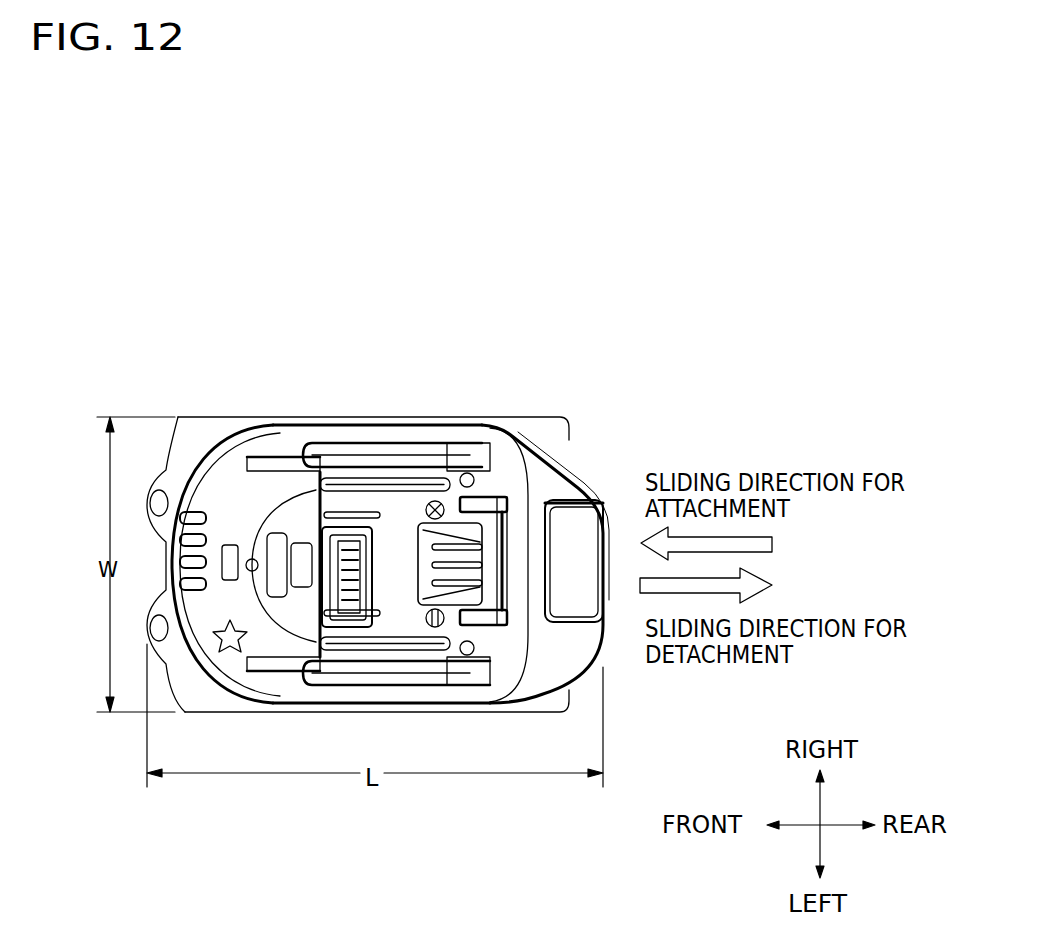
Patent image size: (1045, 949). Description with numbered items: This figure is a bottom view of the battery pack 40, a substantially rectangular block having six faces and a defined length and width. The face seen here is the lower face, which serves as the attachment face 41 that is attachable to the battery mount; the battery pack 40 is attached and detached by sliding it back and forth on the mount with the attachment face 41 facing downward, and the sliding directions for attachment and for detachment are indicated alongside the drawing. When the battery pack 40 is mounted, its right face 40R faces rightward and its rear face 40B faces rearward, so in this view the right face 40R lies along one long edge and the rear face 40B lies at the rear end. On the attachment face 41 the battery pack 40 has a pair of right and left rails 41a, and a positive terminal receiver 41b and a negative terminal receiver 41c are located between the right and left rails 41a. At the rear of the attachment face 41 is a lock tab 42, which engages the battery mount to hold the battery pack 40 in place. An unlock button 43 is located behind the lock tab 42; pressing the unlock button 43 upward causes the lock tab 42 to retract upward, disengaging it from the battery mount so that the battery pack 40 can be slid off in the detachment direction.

The battery pack 40 is at (177, 396).
The right face 40R is at (358, 424).
The rear face 40B is at (605, 487).
The attachment face 41 is at (224, 500).
The rails 41a is at (399, 658).
The positive terminal receiver 41b is at (297, 467).
The negative terminal receiver 41c is at (252, 557).
The lock tab 42 is at (535, 643).
The unlock button 43 is at (572, 540).